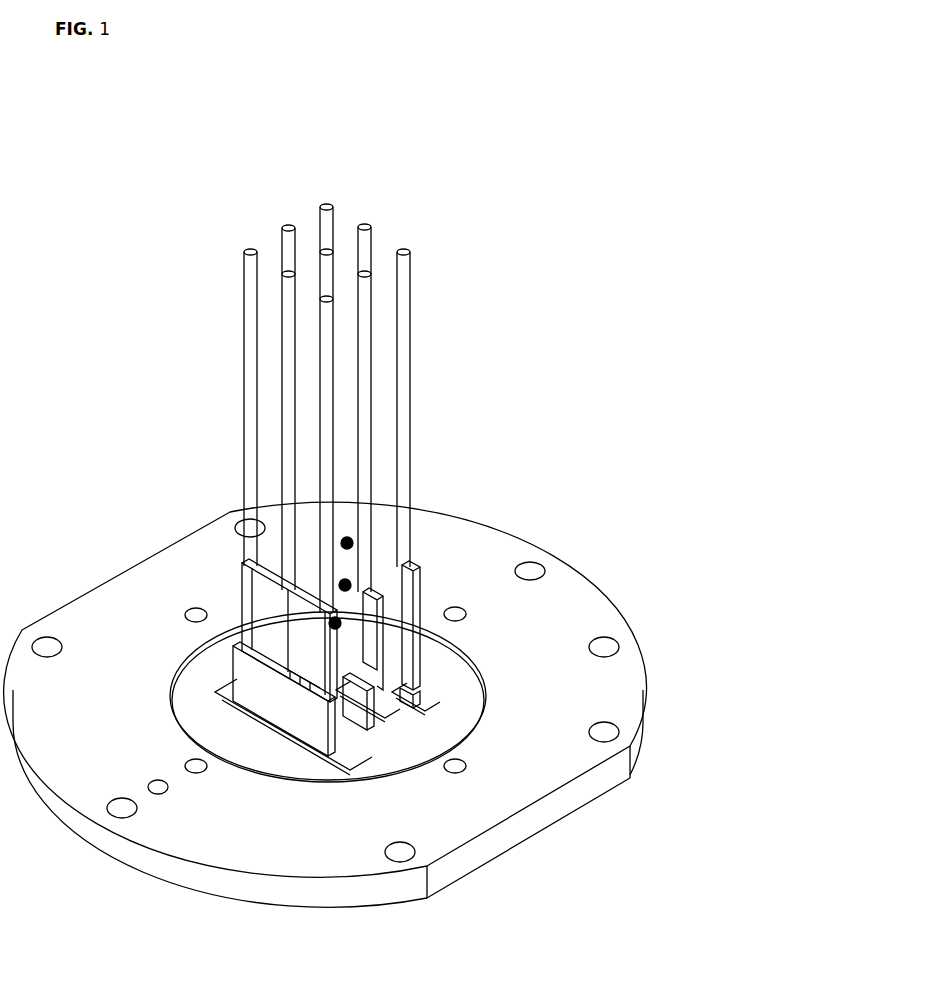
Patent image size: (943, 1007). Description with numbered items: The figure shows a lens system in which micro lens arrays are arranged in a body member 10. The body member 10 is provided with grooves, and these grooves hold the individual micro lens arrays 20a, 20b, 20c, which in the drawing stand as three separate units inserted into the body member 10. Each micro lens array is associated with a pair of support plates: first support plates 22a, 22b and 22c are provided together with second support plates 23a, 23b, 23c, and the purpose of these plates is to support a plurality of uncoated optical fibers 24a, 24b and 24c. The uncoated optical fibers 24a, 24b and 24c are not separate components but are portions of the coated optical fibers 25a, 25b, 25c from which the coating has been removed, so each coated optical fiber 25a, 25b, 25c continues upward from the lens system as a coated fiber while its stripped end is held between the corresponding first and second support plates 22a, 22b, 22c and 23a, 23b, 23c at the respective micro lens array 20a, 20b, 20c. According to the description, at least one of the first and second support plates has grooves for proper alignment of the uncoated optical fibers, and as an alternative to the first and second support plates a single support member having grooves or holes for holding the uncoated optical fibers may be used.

The body member 10 is at (645, 648).
The micro lens array 20a is at (365, 762).
The micro lens array 20b is at (404, 732).
The micro lens array 20c is at (445, 708).
The first support plate 22a is at (339, 617).
The first support plate 22b is at (348, 580).
The first support plate 22c is at (350, 538).
The second support plate 23a is at (349, 731).
The second support plate 23b is at (380, 707).
The second support plate 23c is at (437, 682).
The uncoated optical fiber 24a is at (342, 662).
The uncoated optical fiber 24b is at (388, 608).
The uncoated optical fiber 24c is at (422, 579).
The coated optical fiber 25a is at (247, 253).
The coated optical fiber 25b is at (285, 228).
The coated optical fiber 25c is at (323, 205).